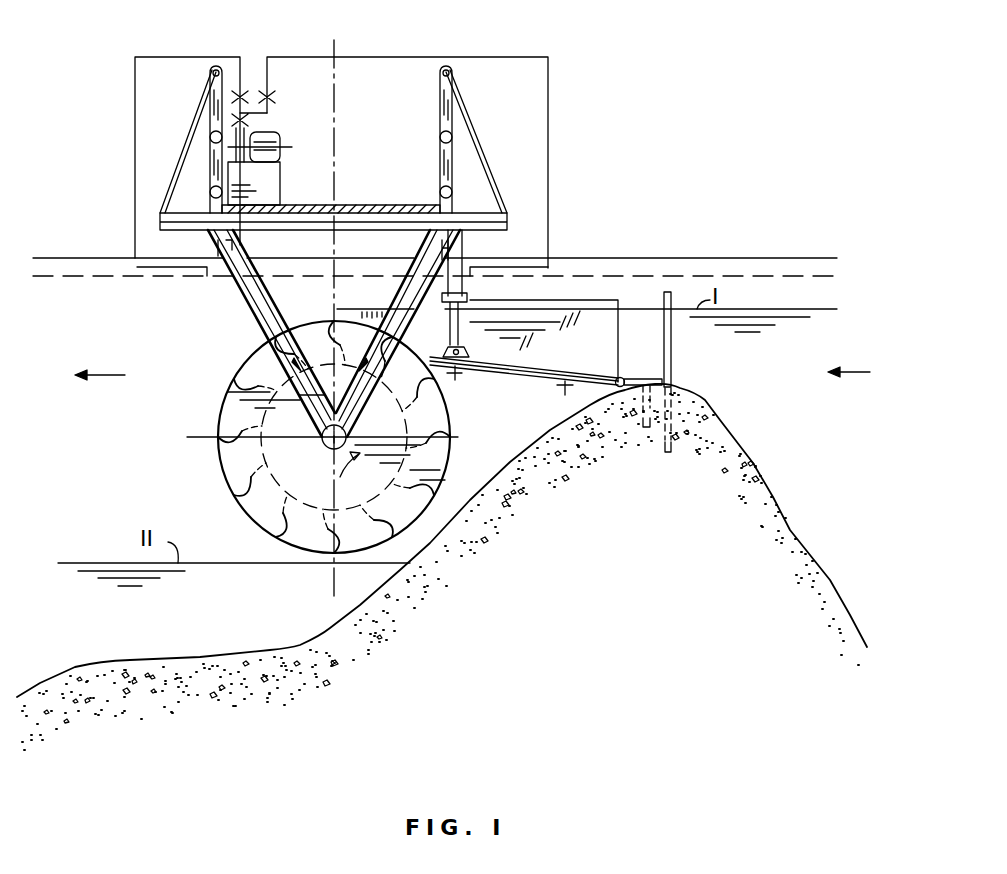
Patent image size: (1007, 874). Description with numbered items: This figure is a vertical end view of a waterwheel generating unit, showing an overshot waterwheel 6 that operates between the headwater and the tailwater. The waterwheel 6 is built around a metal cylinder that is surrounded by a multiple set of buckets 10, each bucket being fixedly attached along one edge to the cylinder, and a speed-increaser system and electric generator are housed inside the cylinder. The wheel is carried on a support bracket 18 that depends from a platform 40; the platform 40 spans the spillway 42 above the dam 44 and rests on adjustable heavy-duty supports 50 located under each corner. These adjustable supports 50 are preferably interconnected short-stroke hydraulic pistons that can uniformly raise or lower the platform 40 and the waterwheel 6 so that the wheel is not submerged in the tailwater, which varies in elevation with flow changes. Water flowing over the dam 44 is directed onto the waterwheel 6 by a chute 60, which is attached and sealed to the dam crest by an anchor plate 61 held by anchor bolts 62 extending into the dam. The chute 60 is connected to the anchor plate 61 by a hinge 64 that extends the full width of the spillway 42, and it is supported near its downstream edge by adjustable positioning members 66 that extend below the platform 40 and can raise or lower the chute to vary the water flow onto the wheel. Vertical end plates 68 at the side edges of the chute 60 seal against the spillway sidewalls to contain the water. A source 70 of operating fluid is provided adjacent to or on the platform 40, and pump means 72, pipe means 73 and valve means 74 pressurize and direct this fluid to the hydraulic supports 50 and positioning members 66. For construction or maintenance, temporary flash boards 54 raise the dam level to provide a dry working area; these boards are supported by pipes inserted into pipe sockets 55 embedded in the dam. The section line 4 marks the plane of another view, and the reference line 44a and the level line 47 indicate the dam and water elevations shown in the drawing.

The section line 4- 4 is at (352, 272).
The overshot waterwheel 6 is at (228, 383).
The buckets 10 is at (232, 418).
The support bracket 18 is at (272, 333).
The platform 40 is at (412, 205).
The spillway 42 is at (688, 393).
The dam 44 is at (650, 546).
The reference water level line 44a is at (646, 276).
The flood water level 47 is at (583, 258).
The adjustable supports 50 is at (218, 250).
The temporary flash boards 54 is at (672, 348).
The pipe sockets 55 is at (672, 420).
The chute 60 is at (552, 364).
The anchor plate 61 is at (672, 378).
The anchor bolts 62 is at (645, 420).
The hinge 64 is at (622, 379).
The adjustable positioning members 66 is at (465, 300).
The vertical end plates 68 is at (585, 300).
The source of operating fluid 70 is at (276, 188).
The pump means 72 is at (274, 132).
The pipe means 73 is at (135, 122).
The valve means 74 is at (268, 97).